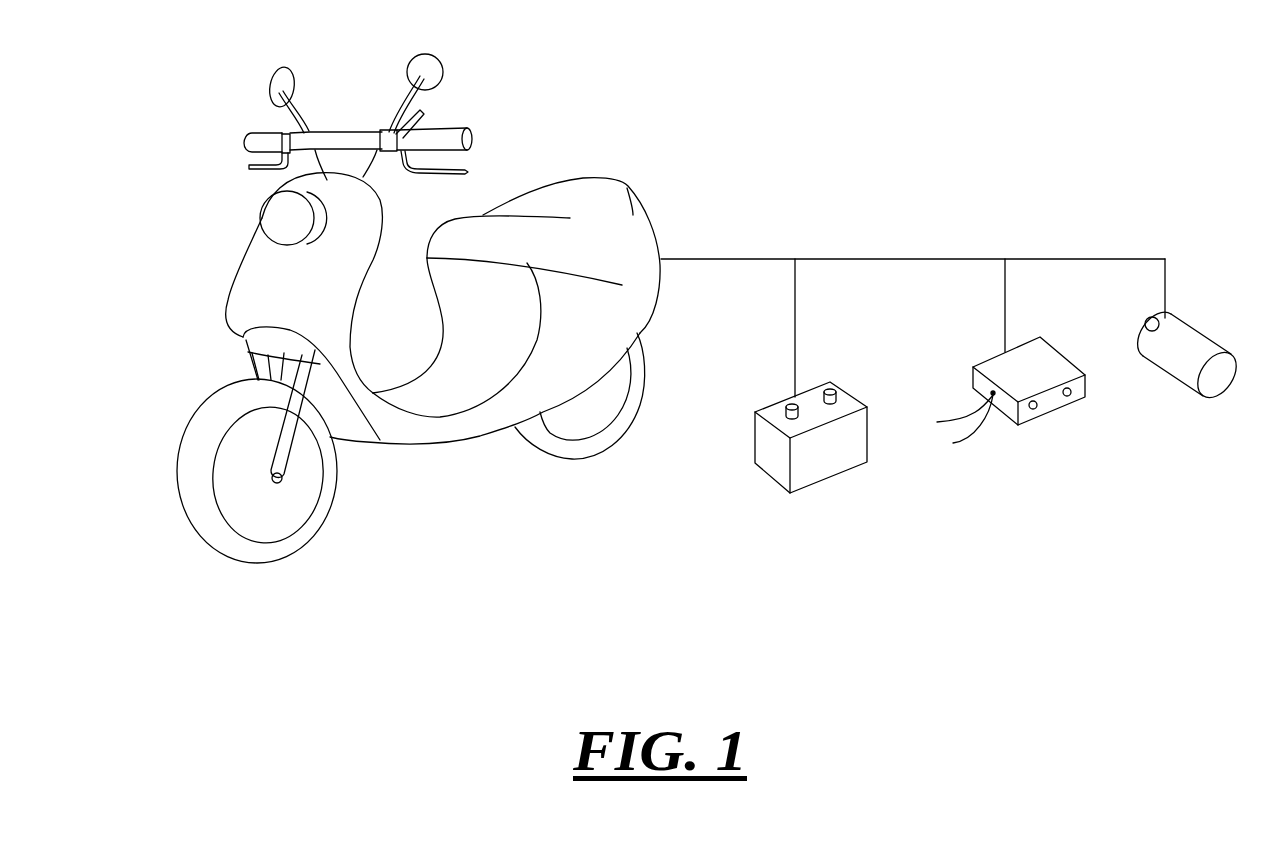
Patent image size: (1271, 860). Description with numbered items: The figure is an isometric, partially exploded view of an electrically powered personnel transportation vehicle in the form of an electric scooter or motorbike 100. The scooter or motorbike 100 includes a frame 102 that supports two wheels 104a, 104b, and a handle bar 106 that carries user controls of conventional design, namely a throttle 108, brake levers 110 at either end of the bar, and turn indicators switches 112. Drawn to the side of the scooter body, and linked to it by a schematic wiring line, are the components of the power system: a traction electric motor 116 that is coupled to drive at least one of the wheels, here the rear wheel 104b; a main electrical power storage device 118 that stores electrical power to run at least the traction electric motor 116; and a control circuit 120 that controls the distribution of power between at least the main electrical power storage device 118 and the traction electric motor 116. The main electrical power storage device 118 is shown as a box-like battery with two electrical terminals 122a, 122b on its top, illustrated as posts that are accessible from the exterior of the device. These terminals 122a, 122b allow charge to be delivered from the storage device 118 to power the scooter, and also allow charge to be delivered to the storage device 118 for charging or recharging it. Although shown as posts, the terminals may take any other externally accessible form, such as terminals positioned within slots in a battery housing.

The electric scooter or motorbike 100 is at (128, 84).
The frame 102 is at (440, 446).
The wheel 104a is at (187, 448).
The wheel 104b is at (585, 452).
The handle bar 106 is at (347, 132).
The throttle 108 is at (257, 138).
The brake levers 110 is at (255, 169).
The turn indicators switches 112 is at (427, 116).
The traction electric motor 116 is at (1197, 337).
The main electrical power storage device 118 is at (830, 470).
The control circuit 120 is at (1052, 405).
The electrical terminal 122a is at (787, 402).
The electrical terminal 122b is at (833, 383).